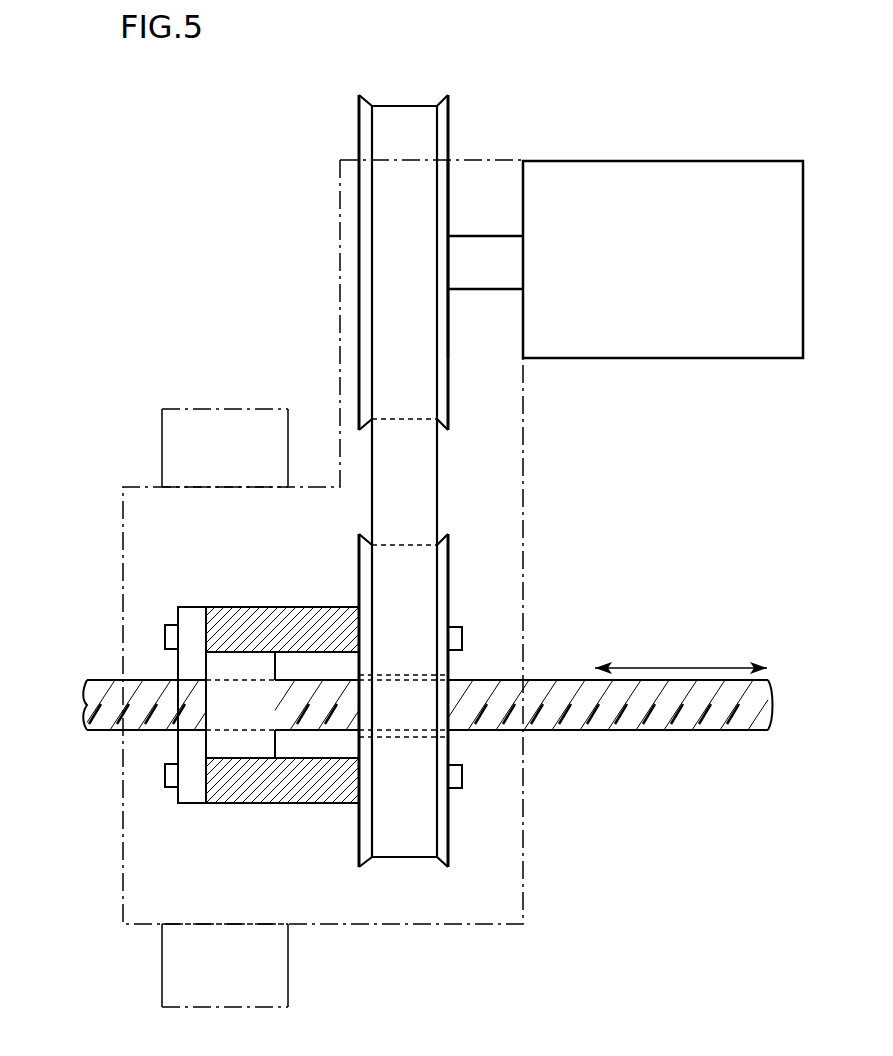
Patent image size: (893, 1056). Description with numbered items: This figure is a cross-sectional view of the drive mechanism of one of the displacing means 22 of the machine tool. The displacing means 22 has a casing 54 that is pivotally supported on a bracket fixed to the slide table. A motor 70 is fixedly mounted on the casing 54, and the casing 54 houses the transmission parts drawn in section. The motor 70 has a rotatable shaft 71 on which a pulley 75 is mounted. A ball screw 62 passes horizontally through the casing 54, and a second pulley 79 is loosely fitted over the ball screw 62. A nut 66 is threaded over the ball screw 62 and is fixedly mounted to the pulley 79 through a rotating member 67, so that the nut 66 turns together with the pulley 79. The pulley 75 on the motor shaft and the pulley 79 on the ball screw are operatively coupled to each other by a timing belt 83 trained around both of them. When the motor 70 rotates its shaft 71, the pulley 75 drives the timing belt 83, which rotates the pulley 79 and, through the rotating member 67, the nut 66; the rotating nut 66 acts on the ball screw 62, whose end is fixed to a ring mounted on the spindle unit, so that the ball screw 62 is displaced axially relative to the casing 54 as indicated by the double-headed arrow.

The displacing means 22 is at (718, 138).
The casing 54 is at (387, 880).
The ball screw 62 is at (110, 687).
The nut 66 is at (235, 747).
The rotating member 67 is at (278, 622).
The motor 70 is at (625, 182).
The rotatable shaft 71 is at (487, 248).
The pulley 75 is at (365, 133).
The pulley 79 is at (442, 573).
The timing belt 83 is at (415, 465).